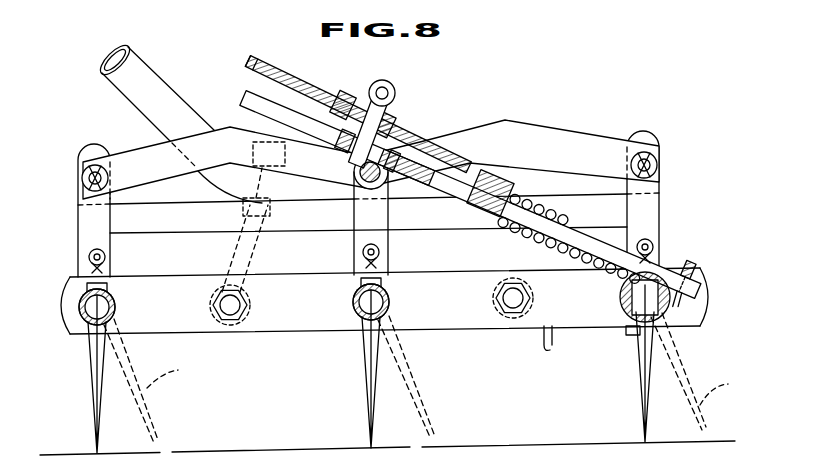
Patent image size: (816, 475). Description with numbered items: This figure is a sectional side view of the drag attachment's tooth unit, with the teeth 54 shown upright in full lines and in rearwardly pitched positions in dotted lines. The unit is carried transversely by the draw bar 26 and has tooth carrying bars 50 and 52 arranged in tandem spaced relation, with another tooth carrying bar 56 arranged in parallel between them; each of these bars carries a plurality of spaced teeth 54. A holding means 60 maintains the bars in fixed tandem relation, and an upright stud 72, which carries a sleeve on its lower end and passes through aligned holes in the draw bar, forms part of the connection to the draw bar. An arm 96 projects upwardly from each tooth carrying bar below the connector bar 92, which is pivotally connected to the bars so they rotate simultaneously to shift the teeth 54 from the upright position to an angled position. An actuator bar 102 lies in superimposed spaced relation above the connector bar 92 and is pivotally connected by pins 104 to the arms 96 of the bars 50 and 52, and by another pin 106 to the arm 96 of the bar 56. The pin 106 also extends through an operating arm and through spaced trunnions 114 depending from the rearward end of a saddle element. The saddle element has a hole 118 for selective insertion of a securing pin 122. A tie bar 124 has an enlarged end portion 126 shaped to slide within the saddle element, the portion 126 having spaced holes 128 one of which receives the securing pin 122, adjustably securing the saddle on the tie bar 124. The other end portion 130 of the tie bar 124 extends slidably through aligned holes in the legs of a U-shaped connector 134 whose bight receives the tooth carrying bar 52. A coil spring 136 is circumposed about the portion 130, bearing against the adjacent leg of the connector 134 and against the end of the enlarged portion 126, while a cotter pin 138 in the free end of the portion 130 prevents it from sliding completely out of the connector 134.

The draw bar 26 is at (160, 77).
The tooth carrying bar 50 is at (80, 300).
The tooth carrying bar 52 is at (682, 323).
The teeth 54 is at (103, 387).
The tooth carrying bar 56 is at (388, 304).
The holding means 60 is at (546, 346).
The upright stud 72 is at (240, 247).
The connector bar 92 is at (585, 195).
The arm 96 is at (652, 217).
The actuator bar 102 is at (147, 158).
The pin 104 is at (88, 180).
The pin 106 is at (395, 133).
The trunnion 114 is at (352, 178).
The hole 118 is at (354, 90).
The securing pin 122 is at (347, 146).
The tie bar 124 is at (448, 195).
The enlarged end portion 126 is at (268, 68).
The holes 128 is at (302, 90).
The end portion 130 is at (588, 268).
The U-shaped connector 134 is at (618, 326).
The coil spring 136 is at (535, 195).
The cotter pin 138 is at (694, 275).